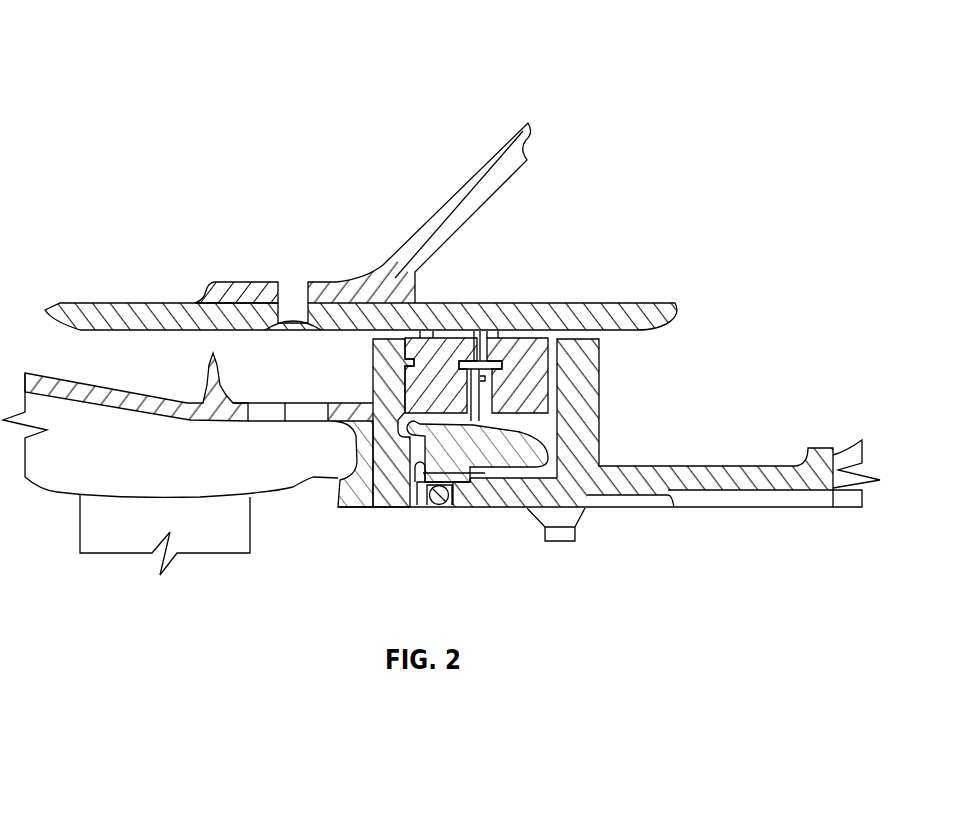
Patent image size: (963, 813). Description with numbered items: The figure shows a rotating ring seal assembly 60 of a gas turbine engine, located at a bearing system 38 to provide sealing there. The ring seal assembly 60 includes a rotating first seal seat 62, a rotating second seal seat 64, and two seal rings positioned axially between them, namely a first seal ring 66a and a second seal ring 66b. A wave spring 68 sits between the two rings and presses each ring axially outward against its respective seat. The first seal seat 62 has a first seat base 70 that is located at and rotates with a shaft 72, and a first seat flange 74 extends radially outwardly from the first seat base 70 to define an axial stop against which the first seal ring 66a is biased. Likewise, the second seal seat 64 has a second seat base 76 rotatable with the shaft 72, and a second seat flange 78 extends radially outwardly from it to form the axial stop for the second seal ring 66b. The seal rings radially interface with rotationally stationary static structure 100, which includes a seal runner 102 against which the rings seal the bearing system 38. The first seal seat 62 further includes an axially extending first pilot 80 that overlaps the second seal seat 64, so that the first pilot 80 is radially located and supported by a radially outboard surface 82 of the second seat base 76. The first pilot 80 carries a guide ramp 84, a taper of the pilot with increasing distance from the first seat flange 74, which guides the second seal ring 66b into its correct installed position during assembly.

The rotating ring seal assembly 60 is at (104, 44).
The bearing system 38 is at (699, 279).
The static structure 100 is at (479, 198).
The seal runner 102 is at (338, 306).
The first seal ring 66a is at (443, 350).
The second seal ring 66b is at (518, 353).
The second seat flange 78 is at (573, 365).
The guide ramp 84 is at (517, 435).
The second seal seat 64 is at (643, 379).
The first seat flange 74 is at (385, 378).
The first seat base 70 is at (383, 497).
The first seal seat 62 is at (352, 506).
The first pilot 80 is at (460, 458).
The wave spring 68 is at (480, 407).
The radially outboard surface 82 is at (583, 503).
The second seat base 76 is at (637, 480).
The shaft 72 is at (754, 587).